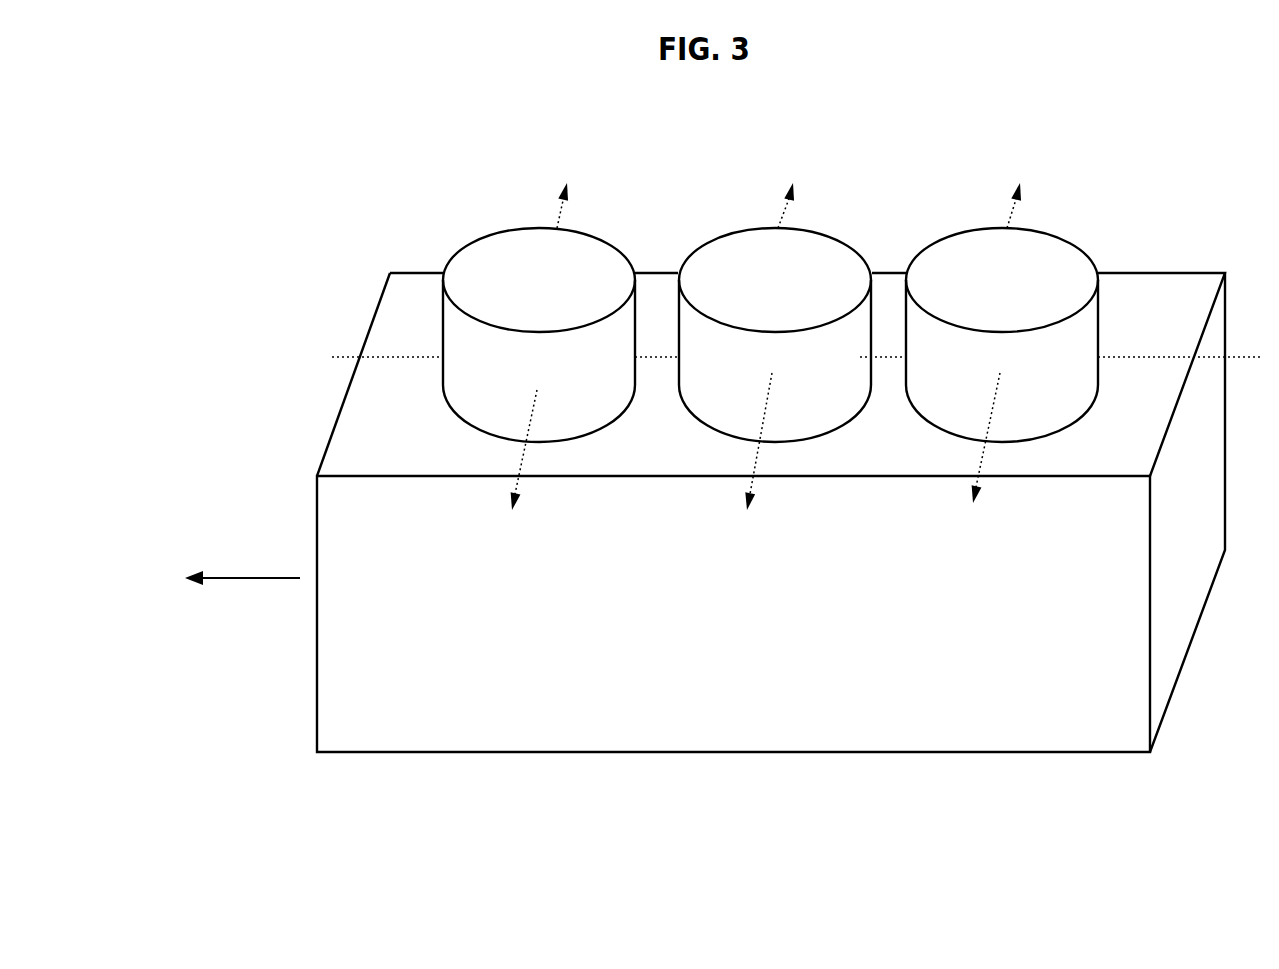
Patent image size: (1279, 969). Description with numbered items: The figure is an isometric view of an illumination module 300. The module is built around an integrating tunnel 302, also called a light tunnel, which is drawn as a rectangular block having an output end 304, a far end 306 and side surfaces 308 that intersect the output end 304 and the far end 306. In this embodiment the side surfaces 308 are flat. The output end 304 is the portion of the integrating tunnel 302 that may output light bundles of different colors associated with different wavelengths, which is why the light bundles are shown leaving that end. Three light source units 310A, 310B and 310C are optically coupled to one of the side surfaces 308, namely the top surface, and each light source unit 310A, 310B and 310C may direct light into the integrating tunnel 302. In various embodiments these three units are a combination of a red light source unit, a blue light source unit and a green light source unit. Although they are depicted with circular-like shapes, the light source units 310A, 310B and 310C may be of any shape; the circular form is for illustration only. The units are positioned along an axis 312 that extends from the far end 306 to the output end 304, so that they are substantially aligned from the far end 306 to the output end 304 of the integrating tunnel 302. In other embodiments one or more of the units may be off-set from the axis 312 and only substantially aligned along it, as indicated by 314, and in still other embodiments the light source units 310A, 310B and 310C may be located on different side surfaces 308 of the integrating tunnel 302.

The illumination module 300 is at (715, 110).
The integrating tunnel 302 is at (762, 726).
The output end 304 is at (290, 438).
The far end 306 is at (1190, 616).
The side surfaces 308 is at (1146, 290).
The light source unit 310A is at (583, 272).
The light source unit 310B is at (828, 263).
The light source unit 310C is at (1057, 252).
The axis 312 is at (400, 355).
The substantial alignment indication 314 is at (558, 222).